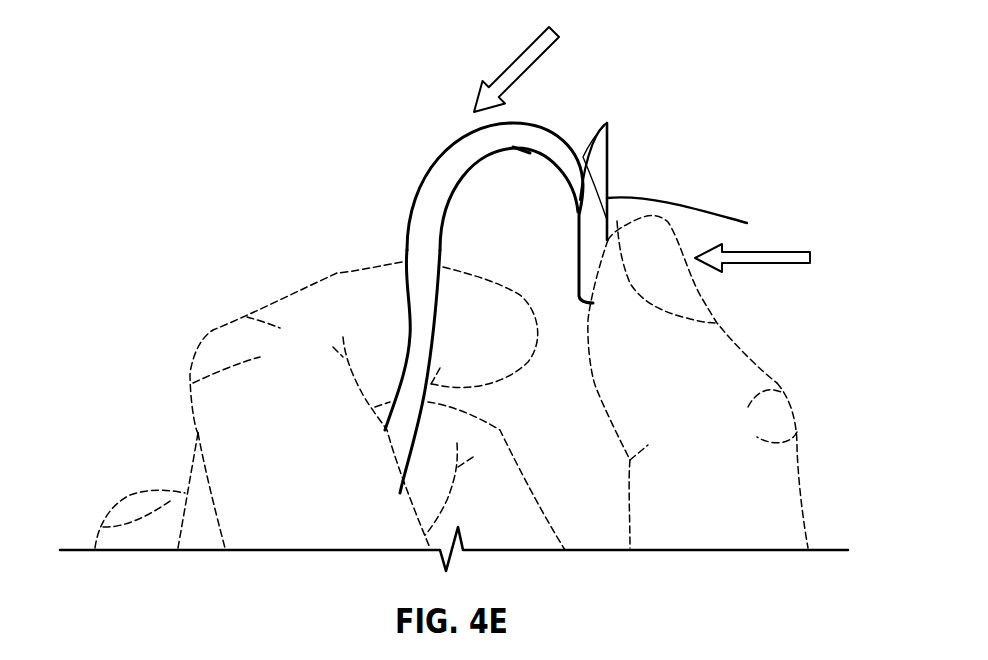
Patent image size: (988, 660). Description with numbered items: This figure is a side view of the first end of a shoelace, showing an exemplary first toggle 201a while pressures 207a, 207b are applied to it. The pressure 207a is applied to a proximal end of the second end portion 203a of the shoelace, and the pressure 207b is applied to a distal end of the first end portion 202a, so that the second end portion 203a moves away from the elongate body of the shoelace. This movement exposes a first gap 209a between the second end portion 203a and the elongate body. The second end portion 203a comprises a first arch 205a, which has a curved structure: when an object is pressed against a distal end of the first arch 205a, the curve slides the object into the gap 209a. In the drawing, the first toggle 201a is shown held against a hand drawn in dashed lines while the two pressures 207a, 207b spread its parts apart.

The first toggle 201a is at (694, 190).
The first end portion 202a is at (747, 223).
The second end portion 203a is at (609, 140).
The first arch 205a is at (607, 124).
The pressure 207a is at (518, 53).
The pressure 207b is at (777, 264).
The first gap 209a is at (568, 137).